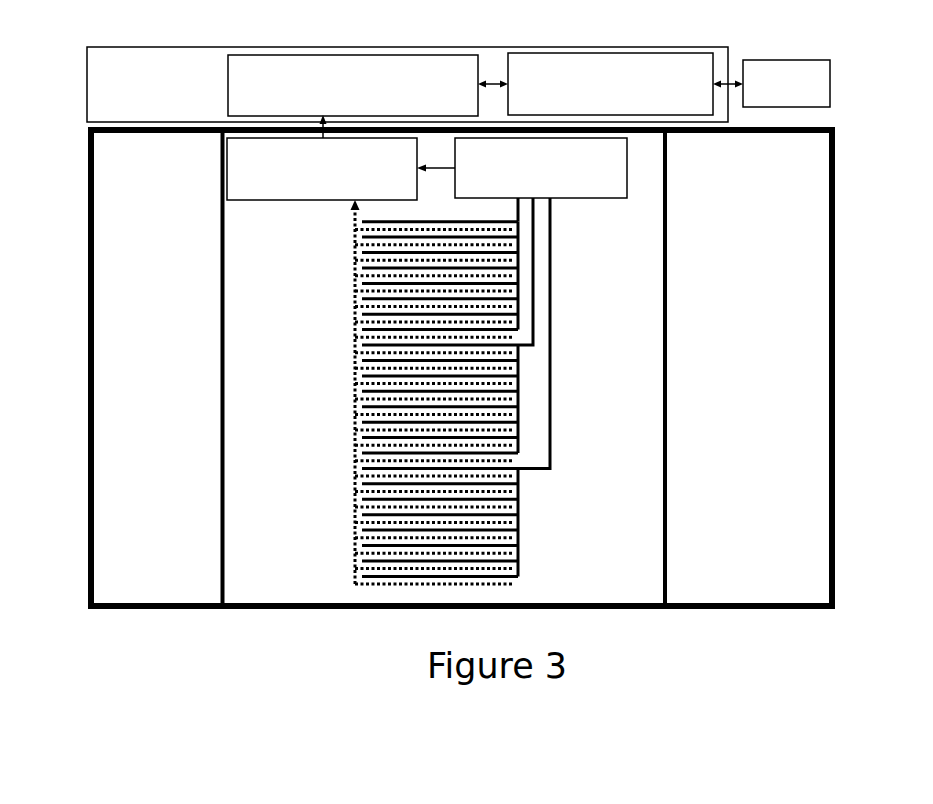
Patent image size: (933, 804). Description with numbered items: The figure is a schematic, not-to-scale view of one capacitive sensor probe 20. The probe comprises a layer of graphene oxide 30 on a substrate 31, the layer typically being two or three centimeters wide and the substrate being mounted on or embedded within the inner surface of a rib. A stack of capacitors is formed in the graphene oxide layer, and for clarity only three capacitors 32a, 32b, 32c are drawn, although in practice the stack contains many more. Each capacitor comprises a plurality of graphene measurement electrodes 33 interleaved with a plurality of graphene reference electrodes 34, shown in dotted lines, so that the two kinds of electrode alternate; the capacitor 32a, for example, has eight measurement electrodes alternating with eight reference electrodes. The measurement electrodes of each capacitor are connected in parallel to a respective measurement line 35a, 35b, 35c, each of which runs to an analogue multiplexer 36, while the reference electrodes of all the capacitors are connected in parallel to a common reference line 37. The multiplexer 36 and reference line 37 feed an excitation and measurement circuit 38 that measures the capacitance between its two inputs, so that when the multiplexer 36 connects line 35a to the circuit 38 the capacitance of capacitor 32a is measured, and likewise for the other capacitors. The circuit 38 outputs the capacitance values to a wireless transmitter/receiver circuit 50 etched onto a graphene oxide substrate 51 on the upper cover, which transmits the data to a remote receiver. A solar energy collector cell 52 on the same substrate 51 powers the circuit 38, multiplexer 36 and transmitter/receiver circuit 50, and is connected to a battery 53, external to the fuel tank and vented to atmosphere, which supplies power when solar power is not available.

The probe 20 is at (742, 631).
The layer of graphene oxide 30 is at (222, 377).
The substrate 31 is at (117, 512).
The capacitor 32a is at (331, 292).
The capacitor 32b is at (331, 408).
The capacitor 32c is at (331, 520).
The graphene measurement electrodes 33 is at (437, 221).
The graphene reference electrodes 34 is at (362, 228).
The measurement line 35a is at (553, 215).
The measurement line 35b is at (536, 329).
The measurement line 35c is at (553, 447).
The analogue multiplexer 36 is at (608, 177).
The common reference line 37 is at (353, 345).
The excitation and measurement circuit 38 is at (253, 192).
The wireless transmitter/receiver circuit 50 is at (228, 77).
The graphene oxide substrate 51 is at (117, 92).
The solar energy collector cell 52 is at (690, 68).
The battery 53 is at (813, 100).